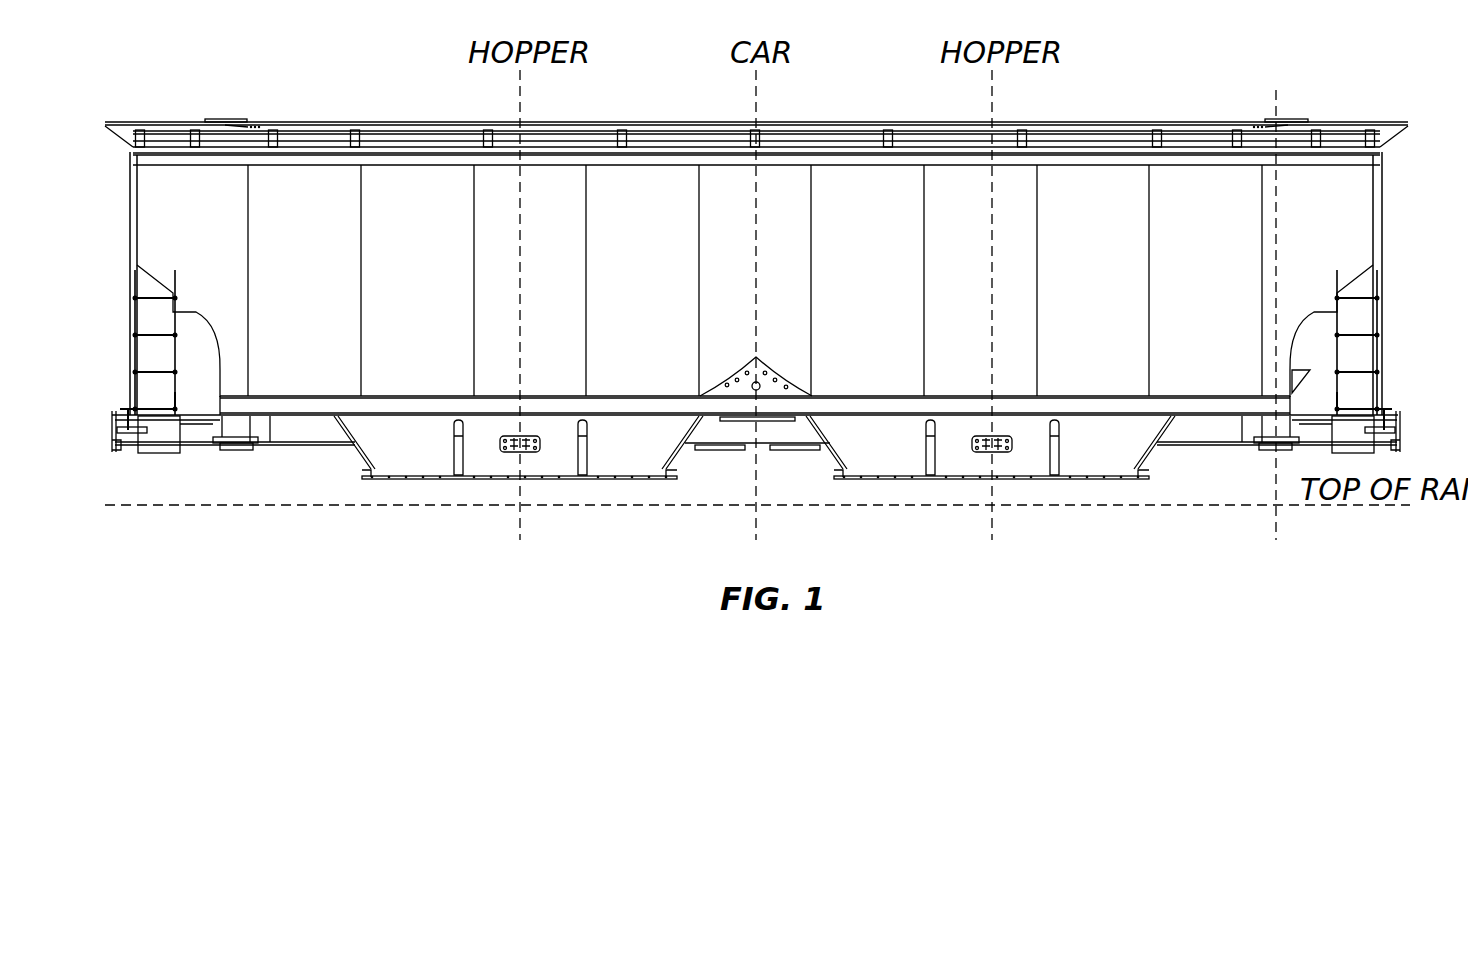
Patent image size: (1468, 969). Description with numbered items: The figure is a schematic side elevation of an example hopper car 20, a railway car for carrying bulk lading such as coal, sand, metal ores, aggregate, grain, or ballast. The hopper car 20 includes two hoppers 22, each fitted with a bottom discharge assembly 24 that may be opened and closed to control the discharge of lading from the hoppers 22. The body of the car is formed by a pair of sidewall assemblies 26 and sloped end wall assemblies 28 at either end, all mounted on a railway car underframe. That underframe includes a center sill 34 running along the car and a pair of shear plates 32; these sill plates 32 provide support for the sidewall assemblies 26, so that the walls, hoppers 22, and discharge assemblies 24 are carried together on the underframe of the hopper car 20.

The hopper car 20 is at (240, 80).
The hopper 22 is at (381, 120).
The bottom discharge assembly 24 is at (412, 452).
The sidewall assembly 26 is at (654, 290).
The sloped end wall assembly 28 is at (205, 332).
The shear plate 32 is at (1182, 405).
The center sill 34 is at (125, 447).